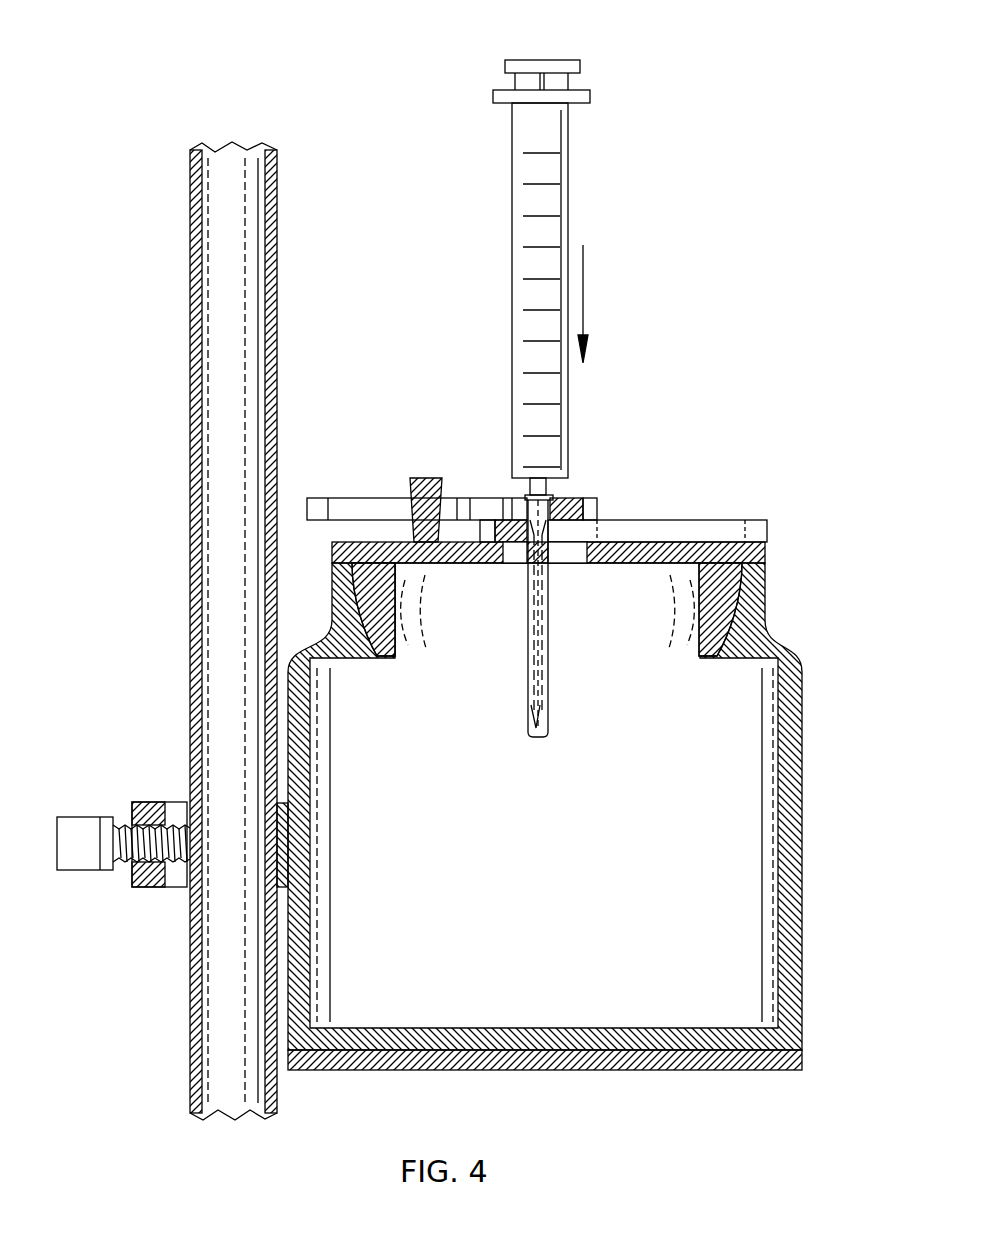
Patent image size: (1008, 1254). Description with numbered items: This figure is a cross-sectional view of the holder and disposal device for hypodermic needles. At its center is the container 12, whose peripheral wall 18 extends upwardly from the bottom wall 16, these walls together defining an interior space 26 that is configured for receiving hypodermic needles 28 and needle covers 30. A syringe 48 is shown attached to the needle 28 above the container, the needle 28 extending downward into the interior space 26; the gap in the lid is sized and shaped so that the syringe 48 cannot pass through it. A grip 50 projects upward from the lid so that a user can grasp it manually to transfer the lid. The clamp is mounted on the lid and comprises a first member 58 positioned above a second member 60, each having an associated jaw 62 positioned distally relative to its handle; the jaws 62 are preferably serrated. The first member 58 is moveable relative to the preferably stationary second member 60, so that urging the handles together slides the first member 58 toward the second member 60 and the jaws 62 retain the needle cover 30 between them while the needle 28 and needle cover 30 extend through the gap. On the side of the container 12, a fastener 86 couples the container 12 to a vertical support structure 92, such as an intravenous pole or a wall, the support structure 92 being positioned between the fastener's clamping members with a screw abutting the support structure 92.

The container 12 is at (596, 835).
The bottom wall 16 is at (727, 1072).
The peripheral wall 18 is at (803, 775).
The interior space 26 is at (728, 750).
The hypodermic needle 28 is at (548, 597).
The needle cover 30 is at (546, 718).
The syringe 48 is at (572, 185).
The grip 50 is at (424, 477).
The first member 58 is at (475, 497).
The second member 60 is at (725, 520).
The jaw 62 is at (565, 497).
The fastener 86 is at (100, 798).
The vertical support structure 92 is at (188, 282).